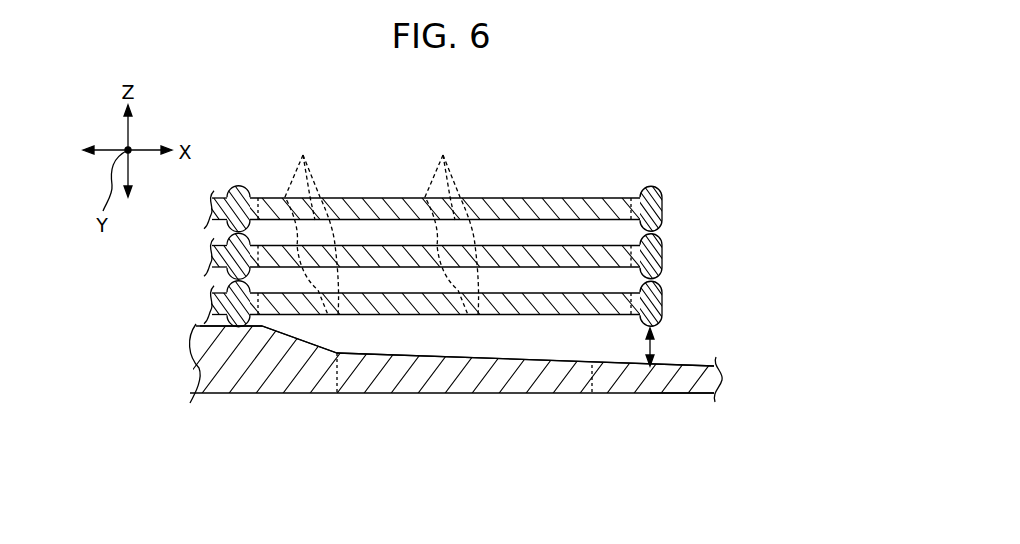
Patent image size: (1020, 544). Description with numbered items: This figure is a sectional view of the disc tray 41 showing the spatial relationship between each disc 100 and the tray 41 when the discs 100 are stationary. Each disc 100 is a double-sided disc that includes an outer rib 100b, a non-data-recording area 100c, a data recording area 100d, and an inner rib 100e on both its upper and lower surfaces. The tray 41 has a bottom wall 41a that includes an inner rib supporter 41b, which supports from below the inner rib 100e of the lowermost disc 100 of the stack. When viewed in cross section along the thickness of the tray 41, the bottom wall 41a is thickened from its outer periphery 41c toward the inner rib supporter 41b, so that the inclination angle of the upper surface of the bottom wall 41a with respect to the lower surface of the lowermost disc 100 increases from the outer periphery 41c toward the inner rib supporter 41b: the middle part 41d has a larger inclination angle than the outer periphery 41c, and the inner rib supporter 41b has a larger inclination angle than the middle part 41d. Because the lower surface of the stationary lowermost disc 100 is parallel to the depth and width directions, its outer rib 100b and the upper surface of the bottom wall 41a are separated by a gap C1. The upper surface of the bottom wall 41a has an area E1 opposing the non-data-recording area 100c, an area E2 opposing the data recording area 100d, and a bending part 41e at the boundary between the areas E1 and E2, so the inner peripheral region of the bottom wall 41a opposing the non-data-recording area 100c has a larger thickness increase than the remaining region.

The disc 100 is at (652, 208).
The outer rib 100b is at (652, 281).
The non-data-recording area 100c is at (310, 222).
The data recording area 100d is at (449, 222).
The inner rib 100e is at (219, 289).
The disc tray 41 is at (218, 357).
The bottom wall 41a is at (591, 403).
The inner rib supporter 41b is at (247, 335).
The outer periphery 41c is at (668, 383).
The middle part 41d is at (480, 383).
The bending part 41e is at (342, 355).
The area opposing non-data-recording area E1 is at (320, 403).
The area opposing data recording area E2 is at (396, 403).
The gap C1 is at (645, 343).